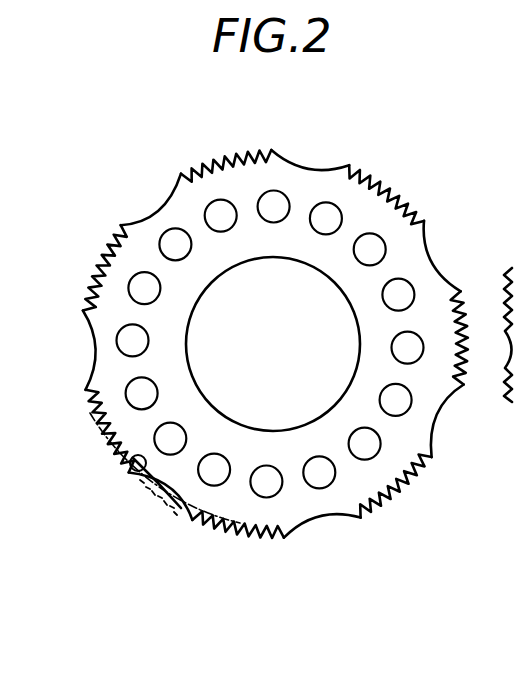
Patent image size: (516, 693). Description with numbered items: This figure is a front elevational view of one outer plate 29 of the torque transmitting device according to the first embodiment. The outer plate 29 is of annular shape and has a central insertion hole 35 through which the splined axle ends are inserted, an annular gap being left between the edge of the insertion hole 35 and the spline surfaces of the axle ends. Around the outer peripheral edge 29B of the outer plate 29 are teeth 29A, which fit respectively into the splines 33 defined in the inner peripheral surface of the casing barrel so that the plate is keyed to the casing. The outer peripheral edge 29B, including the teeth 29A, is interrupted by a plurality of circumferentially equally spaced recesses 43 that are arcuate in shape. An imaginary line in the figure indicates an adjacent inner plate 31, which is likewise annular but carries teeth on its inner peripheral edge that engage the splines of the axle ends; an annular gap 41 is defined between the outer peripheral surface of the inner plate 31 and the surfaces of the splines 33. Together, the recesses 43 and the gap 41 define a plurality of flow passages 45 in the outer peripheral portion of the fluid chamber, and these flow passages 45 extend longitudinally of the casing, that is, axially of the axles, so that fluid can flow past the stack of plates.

The outer plate 29 is at (372, 176).
The teeth 29A is at (104, 232).
The outer peripheral edge 29B is at (223, 176).
The recesses 43 is at (309, 172).
The insertion hole 35 is at (263, 260).
The inner plate 31 is at (98, 430).
The splines 33 is at (130, 462).
The annular gap 41 is at (150, 484).
The flow passages 45 is at (162, 500).